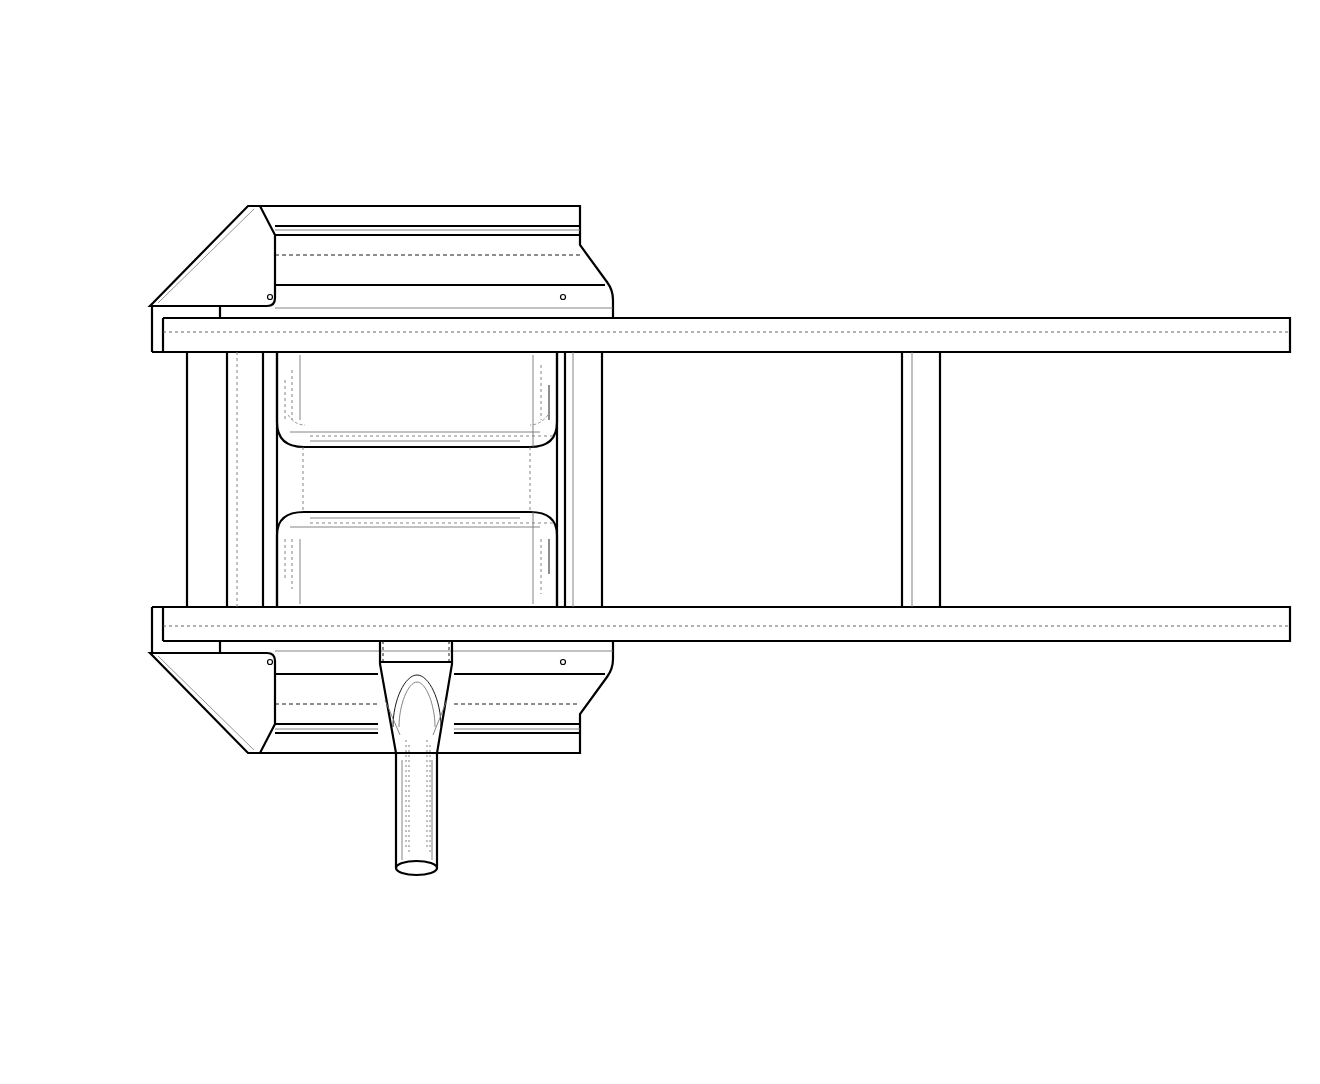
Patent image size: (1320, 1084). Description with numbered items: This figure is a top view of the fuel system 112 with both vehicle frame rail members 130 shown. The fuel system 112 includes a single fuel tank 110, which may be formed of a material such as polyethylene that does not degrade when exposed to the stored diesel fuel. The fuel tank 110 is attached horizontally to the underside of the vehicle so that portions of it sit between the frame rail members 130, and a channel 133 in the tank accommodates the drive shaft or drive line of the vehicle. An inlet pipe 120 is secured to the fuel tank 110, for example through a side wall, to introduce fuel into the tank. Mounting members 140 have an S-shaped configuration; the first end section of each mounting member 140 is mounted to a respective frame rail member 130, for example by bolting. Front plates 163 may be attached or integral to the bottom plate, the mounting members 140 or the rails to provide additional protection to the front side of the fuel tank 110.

The fuel system 112 is at (758, 138).
The fuel tank 110 is at (534, 403).
The inlet pipe 120 is at (437, 820).
The frame rail member 130 is at (840, 318).
The channel 133 is at (342, 483).
The mounting member 140 is at (607, 260).
The front plate 163 is at (220, 260).